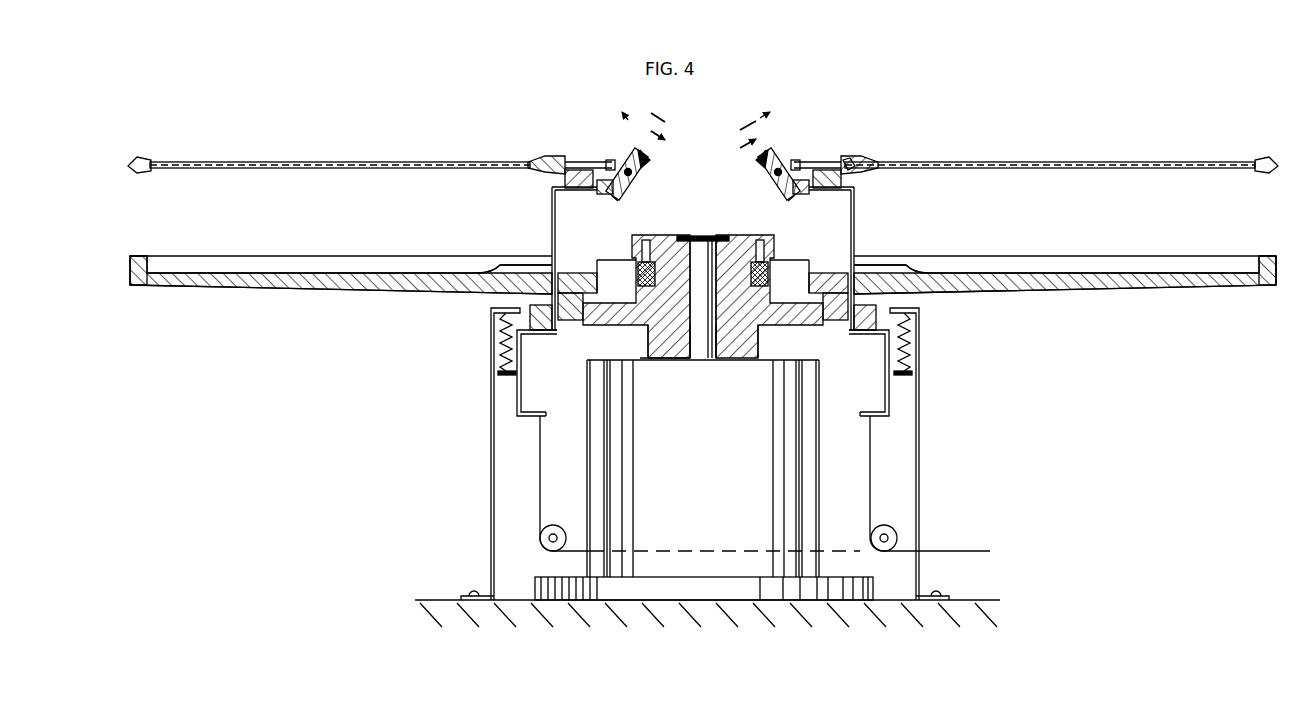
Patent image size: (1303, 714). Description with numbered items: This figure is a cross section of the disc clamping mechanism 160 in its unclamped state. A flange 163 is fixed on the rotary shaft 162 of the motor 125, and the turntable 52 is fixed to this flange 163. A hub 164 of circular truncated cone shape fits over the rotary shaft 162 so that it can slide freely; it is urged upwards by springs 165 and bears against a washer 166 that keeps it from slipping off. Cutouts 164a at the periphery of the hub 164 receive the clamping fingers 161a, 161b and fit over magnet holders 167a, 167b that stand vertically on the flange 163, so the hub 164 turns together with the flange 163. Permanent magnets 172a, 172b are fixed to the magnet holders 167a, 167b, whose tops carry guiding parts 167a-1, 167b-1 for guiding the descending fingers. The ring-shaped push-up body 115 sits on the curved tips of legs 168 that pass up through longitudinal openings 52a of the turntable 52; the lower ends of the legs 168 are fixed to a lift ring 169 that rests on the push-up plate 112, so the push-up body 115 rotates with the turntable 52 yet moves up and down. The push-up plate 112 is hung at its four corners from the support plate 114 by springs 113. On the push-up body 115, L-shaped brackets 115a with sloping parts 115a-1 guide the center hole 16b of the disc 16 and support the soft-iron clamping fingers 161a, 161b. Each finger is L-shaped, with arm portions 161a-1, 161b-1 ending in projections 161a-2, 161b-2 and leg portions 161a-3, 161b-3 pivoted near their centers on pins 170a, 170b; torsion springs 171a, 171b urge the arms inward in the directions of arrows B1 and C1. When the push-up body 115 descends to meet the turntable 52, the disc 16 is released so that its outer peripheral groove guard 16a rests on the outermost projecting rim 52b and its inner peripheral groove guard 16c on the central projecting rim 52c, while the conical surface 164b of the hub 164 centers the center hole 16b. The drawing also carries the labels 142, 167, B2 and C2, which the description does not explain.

The disc 16 is at (405, 162).
The outer peripheral groove guard 16a is at (142, 160).
The center hole 16b is at (848, 164).
The inner peripheral groove guard 16c is at (537, 158).
The turntable 52 is at (284, 286).
The longitudinal openings 52a is at (544, 262).
The outermost peripheral projecting rim 52b is at (149, 262).
The central projecting rim 52c is at (490, 265).
The push-up plate 112 is at (519, 352).
The springs 113 is at (502, 345).
The support plate 114 is at (923, 463).
The push-up body 115 is at (842, 181).
The L-shaped brackets 115a is at (614, 163).
The sloping parts 115a-1 is at (609, 160).
The motor 125 is at (589, 461).
The drive belt guide 142 is at (540, 481).
The disc clamping mechanism 160 is at (1017, 126).
The disc clamping finger 161a is at (652, 164).
The arm portion 161a-1 is at (640, 148).
The projection 161a-2 is at (632, 150).
The leg portion 161a-3 is at (613, 193).
The disc clamping finger 161b is at (756, 164).
The arm portion 161b-1 is at (768, 148).
The projection 161b-2 is at (774, 150).
The leg portion 161b-3 is at (792, 193).
The rotary shaft 162 is at (704, 355).
The flange 163 is at (644, 360).
The hub 164 is at (657, 235).
The cutouts 164a is at (640, 268).
The conical surface 164b is at (782, 238).
The springs 165 is at (673, 362).
The washer 166 is at (700, 236).
The right housing 167 is at (857, 212).
The magnet holder 167a is at (657, 358).
The guiding part 167a-1 is at (642, 248).
The magnet holder 167b is at (768, 306).
The guiding part 167b-1 is at (772, 248).
The legs 168 is at (552, 208).
The lift ring 169 is at (893, 308).
The pin 170a is at (638, 175).
The pin 170b is at (768, 175).
The torsion spring 171a is at (603, 191).
The torsion spring 171b is at (803, 191).
The permanent magnet 172a is at (625, 306).
The permanent magnet 172b is at (797, 308).
The arrow B1 is at (637, 126).
The direction arrow B2 is at (673, 130).
The arrow C1 is at (772, 126).
The direction arrow C2 is at (737, 134).